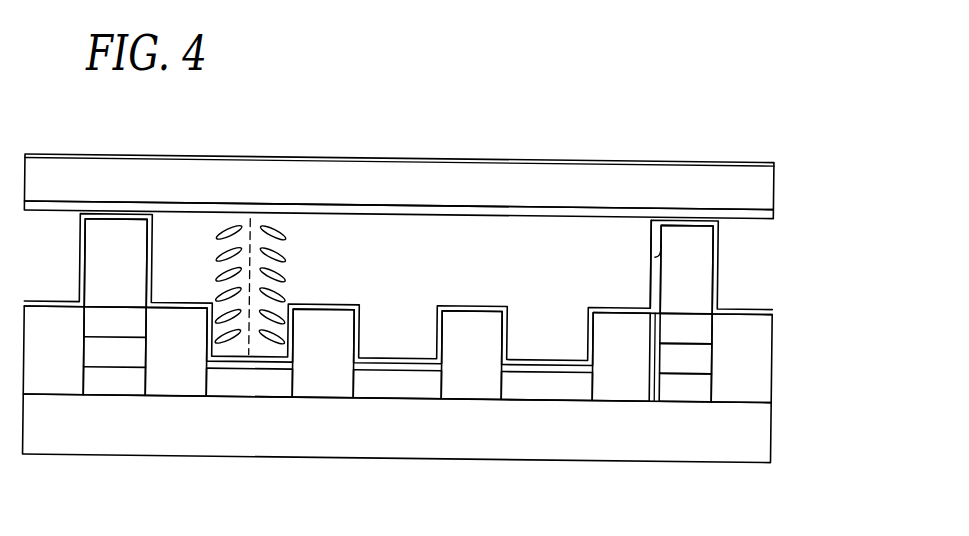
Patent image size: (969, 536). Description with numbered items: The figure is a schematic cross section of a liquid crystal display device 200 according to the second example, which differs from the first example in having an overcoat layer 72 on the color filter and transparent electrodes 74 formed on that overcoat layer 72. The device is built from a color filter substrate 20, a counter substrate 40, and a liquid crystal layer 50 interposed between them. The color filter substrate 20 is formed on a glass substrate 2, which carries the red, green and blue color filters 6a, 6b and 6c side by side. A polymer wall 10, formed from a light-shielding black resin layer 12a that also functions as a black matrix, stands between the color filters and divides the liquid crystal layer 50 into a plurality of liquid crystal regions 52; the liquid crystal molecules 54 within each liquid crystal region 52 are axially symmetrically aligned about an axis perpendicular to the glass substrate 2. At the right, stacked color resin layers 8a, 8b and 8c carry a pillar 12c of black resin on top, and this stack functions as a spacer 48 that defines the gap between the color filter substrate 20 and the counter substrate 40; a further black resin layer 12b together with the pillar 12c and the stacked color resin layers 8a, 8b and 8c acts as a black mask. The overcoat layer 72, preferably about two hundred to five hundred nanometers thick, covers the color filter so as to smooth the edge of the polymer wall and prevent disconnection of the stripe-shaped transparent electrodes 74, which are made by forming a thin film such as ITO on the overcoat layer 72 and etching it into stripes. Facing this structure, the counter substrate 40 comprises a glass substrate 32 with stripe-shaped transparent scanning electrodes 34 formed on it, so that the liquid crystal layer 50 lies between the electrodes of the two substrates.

The glass substrate 2 is at (755, 425).
The red color filter 6a is at (228, 386).
The green color filter 6b is at (381, 383).
The blue color filter 6c is at (531, 384).
The color resin layer 8a is at (661, 390).
The color resin layer 8b is at (698, 361).
The color resin layer 8c is at (704, 326).
The polymer wall 10 is at (614, 292).
The black resin layer 12a is at (480, 387).
The black resin layer 12b is at (623, 388).
The pillar 12c is at (702, 288).
The color filter substrate 20 is at (822, 271).
The glass substrate 32 is at (758, 165).
The transparent scanning electrodes 34 is at (423, 203).
The counter substrate 40 is at (448, 179).
The spacer 48 is at (649, 233).
The liquid crystal layer 50 is at (398, 273).
The liquid crystal region 52 is at (291, 225).
The liquid crystal molecules 54 is at (229, 225).
The overcoat layer 72 is at (646, 270).
The transparent electrodes 74 is at (271, 356).
The liquid crystal display device 200 is at (448, 147).